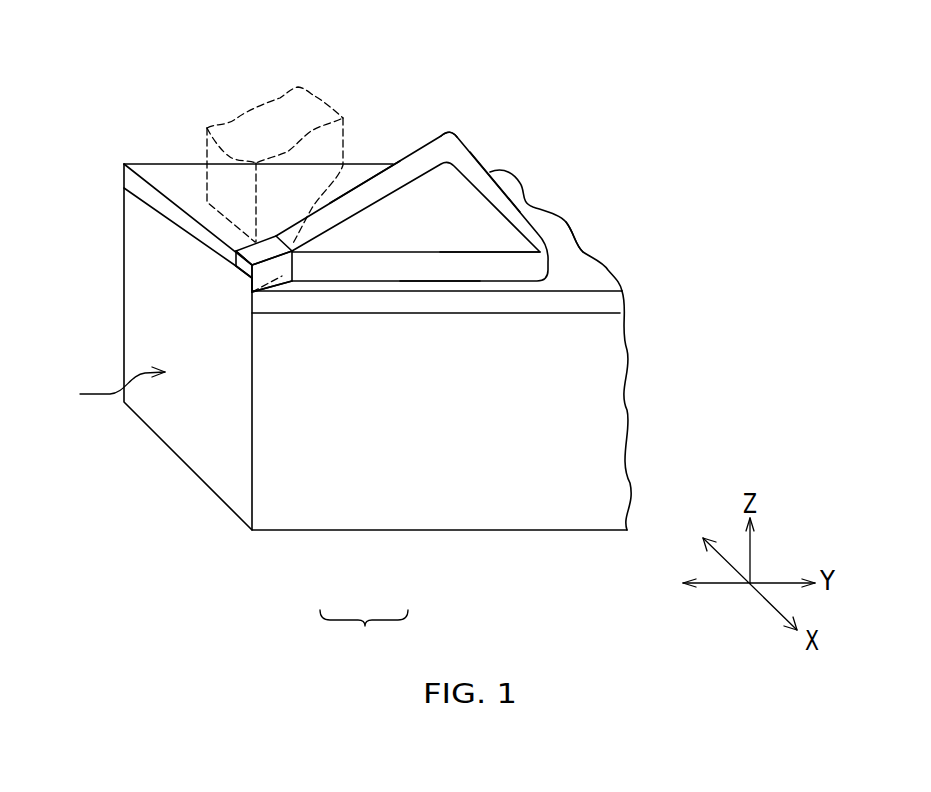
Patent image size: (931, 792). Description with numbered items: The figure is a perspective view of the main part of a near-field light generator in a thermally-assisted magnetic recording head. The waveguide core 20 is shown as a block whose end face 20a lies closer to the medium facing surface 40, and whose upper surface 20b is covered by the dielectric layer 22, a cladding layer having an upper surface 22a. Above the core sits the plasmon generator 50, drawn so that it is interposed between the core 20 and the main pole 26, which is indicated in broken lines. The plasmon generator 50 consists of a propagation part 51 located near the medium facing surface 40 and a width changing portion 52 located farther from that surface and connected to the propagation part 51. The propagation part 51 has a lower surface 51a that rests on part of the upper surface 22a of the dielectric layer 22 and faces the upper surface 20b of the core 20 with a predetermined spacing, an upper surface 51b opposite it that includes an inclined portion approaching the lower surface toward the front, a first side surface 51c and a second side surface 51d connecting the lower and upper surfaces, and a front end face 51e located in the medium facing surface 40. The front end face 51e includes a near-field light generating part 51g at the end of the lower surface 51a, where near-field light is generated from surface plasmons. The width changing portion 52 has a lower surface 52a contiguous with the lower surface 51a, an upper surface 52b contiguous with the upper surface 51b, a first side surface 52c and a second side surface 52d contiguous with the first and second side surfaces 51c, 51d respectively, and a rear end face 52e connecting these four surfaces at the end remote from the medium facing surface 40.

The core 20 is at (618, 417).
The end face of the core 20a is at (146, 346).
The upper surface of the core 20b is at (592, 317).
The dielectric layer 22 is at (613, 270).
The upper surface of the dielectric layer 22a is at (582, 260).
The main pole 26 is at (292, 92).
The medium facing surface 40 is at (107, 389).
The plasmon generator 50 is at (364, 638).
The propagation part 51 is at (285, 285).
The lower surface of the propagation part 51a is at (245, 298).
The upper surface of the propagation part 51b is at (250, 247).
The first side surface of the propagation part 51c is at (263, 286).
The second side surface of the propagation part 51d is at (258, 240).
The front end face 51e is at (237, 272).
The near-field light generating part 51g is at (244, 283).
The width changing portion 52 is at (357, 282).
The lower surface of the width changing portion 52a is at (439, 268).
The upper surface of the width changing portion 52b is at (438, 178).
The first side surface of the width changing portion 52c is at (486, 270).
The second side surface of the width changing portion 52d is at (366, 192).
The rear end face 52e is at (495, 190).